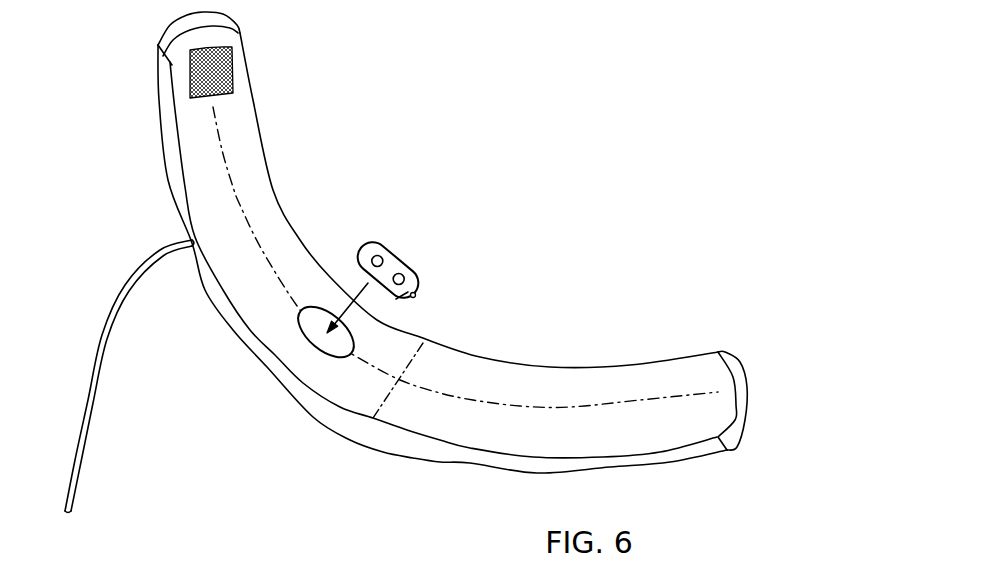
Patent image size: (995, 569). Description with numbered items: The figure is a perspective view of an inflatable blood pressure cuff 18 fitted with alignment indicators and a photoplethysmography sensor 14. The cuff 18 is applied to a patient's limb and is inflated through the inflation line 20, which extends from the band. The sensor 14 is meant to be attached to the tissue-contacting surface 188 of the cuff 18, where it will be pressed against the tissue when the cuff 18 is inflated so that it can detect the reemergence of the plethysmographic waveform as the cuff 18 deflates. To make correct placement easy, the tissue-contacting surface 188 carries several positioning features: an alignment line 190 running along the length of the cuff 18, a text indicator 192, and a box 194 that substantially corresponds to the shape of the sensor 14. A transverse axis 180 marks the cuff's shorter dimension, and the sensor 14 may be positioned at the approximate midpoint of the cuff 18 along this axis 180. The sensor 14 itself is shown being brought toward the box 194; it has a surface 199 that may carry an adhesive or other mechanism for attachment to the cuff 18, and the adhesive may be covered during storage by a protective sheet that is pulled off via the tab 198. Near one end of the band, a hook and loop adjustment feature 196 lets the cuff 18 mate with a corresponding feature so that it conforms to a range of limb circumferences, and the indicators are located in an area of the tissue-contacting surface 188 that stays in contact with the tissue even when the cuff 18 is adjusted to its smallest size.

The inflatable cuff 18 is at (158, 95).
The inflation line 20 is at (116, 333).
The photoplethysmography sensor 14 is at (377, 243).
The hook and loop adjustment feature 196 is at (232, 63).
The tab 198 is at (417, 295).
The surface 199 is at (390, 305).
The box 194 is at (300, 313).
The text indicator 192 is at (305, 368).
The axis 180 is at (387, 393).
The tissue-contacting surface 188 is at (570, 378).
The alignment line 190 is at (542, 408).